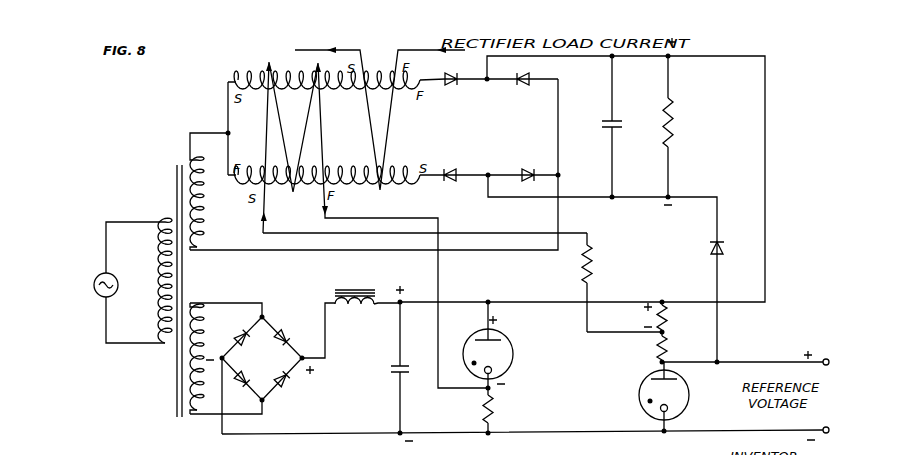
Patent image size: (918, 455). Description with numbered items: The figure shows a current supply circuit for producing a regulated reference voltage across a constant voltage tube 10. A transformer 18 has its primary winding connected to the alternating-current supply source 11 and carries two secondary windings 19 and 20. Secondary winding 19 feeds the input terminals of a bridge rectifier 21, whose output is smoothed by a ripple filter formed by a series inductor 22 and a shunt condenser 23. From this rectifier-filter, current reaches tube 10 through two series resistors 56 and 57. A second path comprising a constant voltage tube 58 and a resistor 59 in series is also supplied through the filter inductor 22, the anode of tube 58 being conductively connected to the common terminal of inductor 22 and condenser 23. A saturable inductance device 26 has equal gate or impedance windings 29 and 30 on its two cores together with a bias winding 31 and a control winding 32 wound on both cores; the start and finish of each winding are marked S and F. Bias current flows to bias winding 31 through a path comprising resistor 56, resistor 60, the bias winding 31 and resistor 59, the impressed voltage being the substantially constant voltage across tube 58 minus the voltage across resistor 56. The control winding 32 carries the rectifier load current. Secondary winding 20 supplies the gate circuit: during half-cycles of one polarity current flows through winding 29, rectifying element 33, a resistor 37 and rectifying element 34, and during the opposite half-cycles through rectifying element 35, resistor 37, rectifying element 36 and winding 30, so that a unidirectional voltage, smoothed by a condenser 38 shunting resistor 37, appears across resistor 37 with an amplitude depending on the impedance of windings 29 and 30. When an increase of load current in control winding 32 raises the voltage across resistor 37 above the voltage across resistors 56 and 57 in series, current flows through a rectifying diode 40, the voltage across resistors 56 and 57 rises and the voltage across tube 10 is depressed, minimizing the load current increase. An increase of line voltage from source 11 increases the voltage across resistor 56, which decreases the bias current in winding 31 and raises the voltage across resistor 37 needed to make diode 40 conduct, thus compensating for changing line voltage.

The constant voltage tube 10 is at (640, 397).
The alternating-current supply source 11 is at (104, 297).
The transformer 18 is at (177, 165).
The secondary winding 19 is at (204, 341).
The secondary winding 20 is at (199, 199).
The bridge rectifier 21 is at (262, 375).
The series inductor 22 is at (353, 309).
The shunt condenser 23 is at (391, 370).
The saturable inductance device 26 is at (203, 102).
The gate winding 29 is at (345, 89).
The gate winding 30 is at (348, 184).
The bias winding 31 is at (323, 163).
The control winding 32 is at (392, 121).
The rectifying element 33 is at (455, 86).
The rectifying element 34 is at (529, 166).
The rectifying element 35 is at (524, 86).
The rectifying element 36 is at (450, 168).
The resistor 37 is at (673, 122).
The condenser 38 is at (602, 125).
The rectifying diode 40 is at (710, 249).
The resistor 56 is at (670, 318).
The resistor 57 is at (670, 353).
The constant voltage tube 58 is at (511, 347).
The resistor 59 is at (502, 412).
The resistor 60 is at (595, 271).